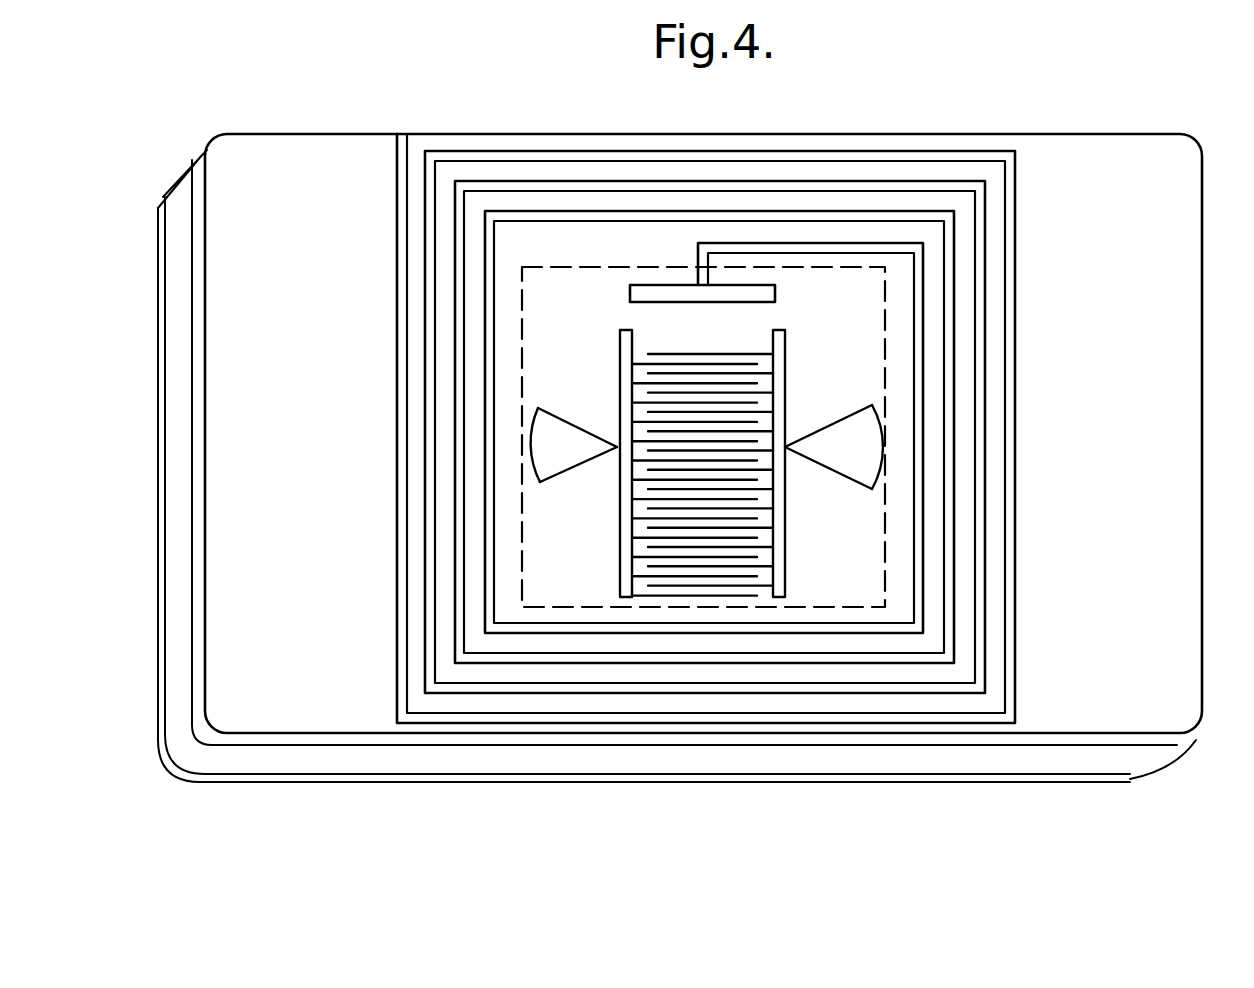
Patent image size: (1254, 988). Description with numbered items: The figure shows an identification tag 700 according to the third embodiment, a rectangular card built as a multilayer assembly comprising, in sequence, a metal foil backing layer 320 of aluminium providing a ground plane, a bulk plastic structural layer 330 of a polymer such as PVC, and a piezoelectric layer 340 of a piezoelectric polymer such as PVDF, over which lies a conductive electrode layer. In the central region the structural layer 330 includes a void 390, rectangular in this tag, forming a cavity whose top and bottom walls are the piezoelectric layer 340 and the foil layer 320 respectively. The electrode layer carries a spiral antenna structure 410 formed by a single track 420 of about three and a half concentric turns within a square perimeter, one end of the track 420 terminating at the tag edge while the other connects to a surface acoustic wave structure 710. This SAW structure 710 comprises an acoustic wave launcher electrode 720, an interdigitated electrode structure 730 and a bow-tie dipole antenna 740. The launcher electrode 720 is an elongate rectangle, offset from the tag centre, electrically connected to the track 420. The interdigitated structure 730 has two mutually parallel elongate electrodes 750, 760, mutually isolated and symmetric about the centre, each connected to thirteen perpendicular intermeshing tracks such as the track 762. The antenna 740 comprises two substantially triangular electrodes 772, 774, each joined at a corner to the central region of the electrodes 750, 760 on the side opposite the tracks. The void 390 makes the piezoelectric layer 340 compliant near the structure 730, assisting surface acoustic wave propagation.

The tag 700 is at (1202, 126).
The piezoelectric layer 340 is at (1177, 747).
The bulk plastic structural layer 330 is at (1130, 765).
The metal foil backing layer 320 is at (1040, 784).
The single track 420 is at (715, 724).
The spiral antenna structure 410 is at (1002, 432).
The void 390 is at (541, 287).
The acoustic wave launcher electrode 720 is at (651, 285).
The surface acoustic wave (SAW) structure 710 is at (703, 557).
The elongate electrode 750 is at (620, 580).
The elongate electrode 760 is at (786, 577).
The interdigitated electrode structure 730 is at (613, 523).
The track 762 is at (651, 600).
The bow-tie dipole antenna 740 is at (703, 438).
The triangular electrode 772 is at (533, 412).
The triangular electrode 774 is at (878, 412).